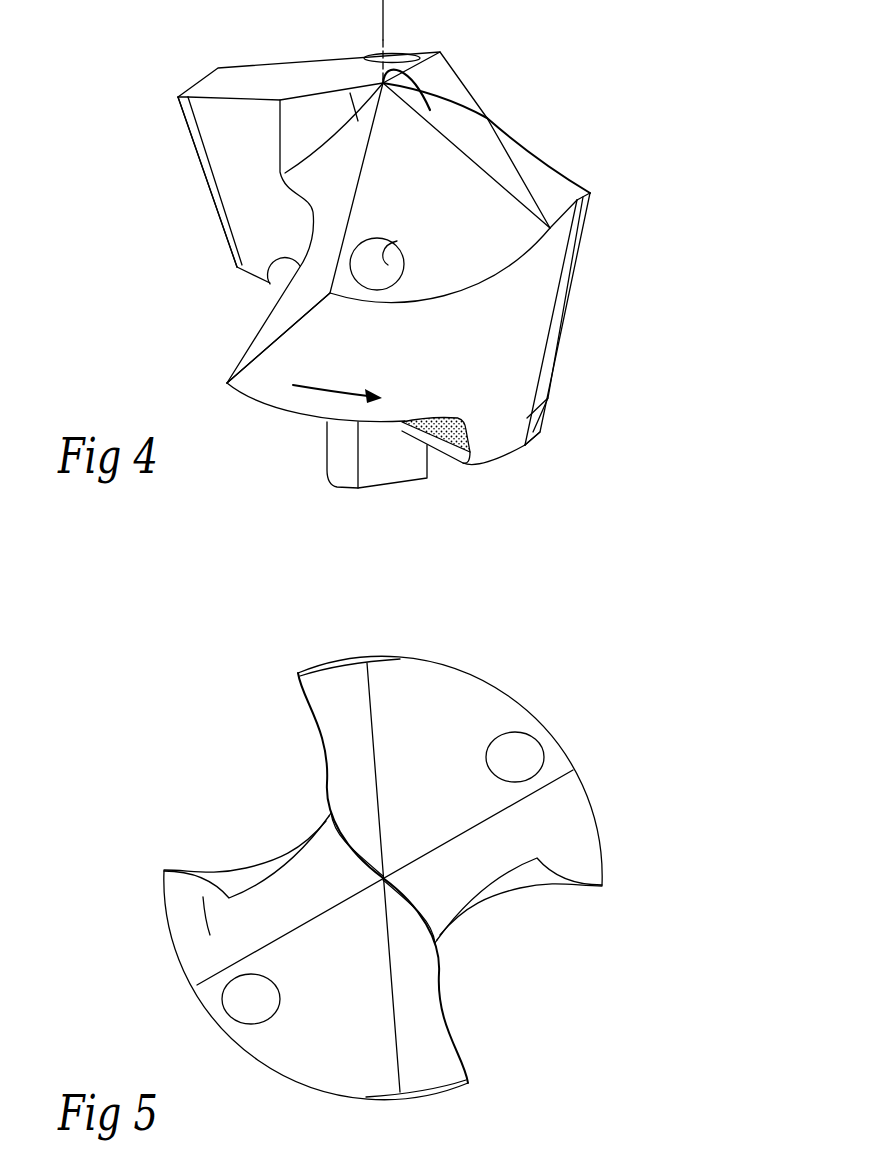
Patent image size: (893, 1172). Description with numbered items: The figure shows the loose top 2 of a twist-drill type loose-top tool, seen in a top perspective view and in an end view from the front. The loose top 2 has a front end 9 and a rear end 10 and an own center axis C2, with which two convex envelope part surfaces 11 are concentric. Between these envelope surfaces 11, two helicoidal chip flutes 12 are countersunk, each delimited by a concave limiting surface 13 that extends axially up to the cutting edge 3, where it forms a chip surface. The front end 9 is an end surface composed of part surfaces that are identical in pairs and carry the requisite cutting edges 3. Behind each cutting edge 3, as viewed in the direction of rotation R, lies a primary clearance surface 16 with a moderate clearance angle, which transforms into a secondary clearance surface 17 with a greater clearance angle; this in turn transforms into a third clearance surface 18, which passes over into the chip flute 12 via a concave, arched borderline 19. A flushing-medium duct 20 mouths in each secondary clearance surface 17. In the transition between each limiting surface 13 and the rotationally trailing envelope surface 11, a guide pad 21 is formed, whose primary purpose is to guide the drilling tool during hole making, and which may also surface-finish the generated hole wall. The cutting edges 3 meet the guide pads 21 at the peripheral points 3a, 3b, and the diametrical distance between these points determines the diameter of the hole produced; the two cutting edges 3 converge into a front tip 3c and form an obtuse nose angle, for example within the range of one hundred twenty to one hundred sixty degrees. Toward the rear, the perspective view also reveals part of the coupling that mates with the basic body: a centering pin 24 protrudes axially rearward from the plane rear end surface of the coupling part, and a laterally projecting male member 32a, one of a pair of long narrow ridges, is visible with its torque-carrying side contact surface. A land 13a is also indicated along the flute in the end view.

In FIG. 4, the loose top 2 is at (180, 173).
In FIG. 4, the cutting edge 3 is at (213, 95).
In FIG. 5, the cutting edge 3 is at (317, 732).
In FIG. 4, the peripheral point 3a is at (175, 100).
In FIG. 4, the peripheral point 3b is at (590, 184).
In FIG. 4, the front tip 3c is at (413, 93).
In FIG. 5, the front tip 3c is at (384, 872).
In FIG. 4, the front end 9 is at (490, 80).
In FIG. 4, the rear end 10 is at (532, 468).
In FIG. 4, the convex envelope part surface 11 is at (402, 322).
In FIG. 4, the chip flute 12 is at (238, 280).
In FIG. 5, the chip flute 12 is at (258, 800).
In FIG. 4, the concave limiting surface 13 is at (270, 241).
In FIG. 5, the land 13a is at (235, 880).
In FIG. 4, the primary clearance surface 16 is at (518, 173).
In FIG. 5, the primary clearance surface 16 is at (423, 998).
In FIG. 4, the secondary clearance surface 17 is at (453, 192).
In FIG. 5, the secondary clearance surface 17 is at (385, 872).
In FIG. 4, the third clearance surface 18 is at (305, 233).
In FIG. 5, the third clearance surface 18 is at (325, 852).
In FIG. 4, the concave arched borderline 19 is at (270, 284).
In FIG. 5, the concave arched borderline 19 is at (213, 931).
In FIG. 4, the flushing-medium duct 20 is at (390, 248).
In FIG. 5, the flushing-medium duct 20 is at (515, 752).
In FIG. 4, the guide pad 21 is at (572, 310).
In FIG. 4, the centering pin 24 is at (340, 483).
In FIG. 4, the male member 32a is at (472, 455).
In FIG. 4, the center axis C2 is at (378, 11).
In FIG. 4, the direction of rotation R is at (337, 381).